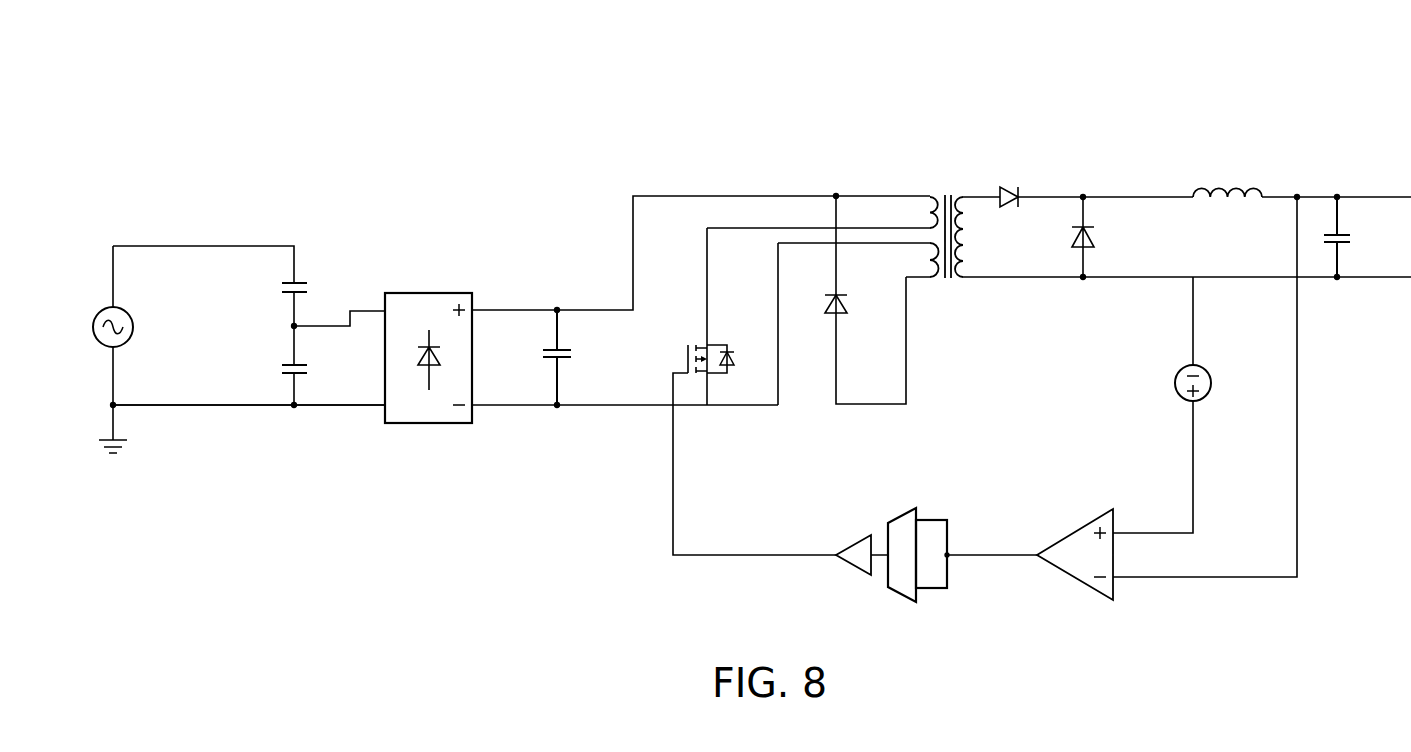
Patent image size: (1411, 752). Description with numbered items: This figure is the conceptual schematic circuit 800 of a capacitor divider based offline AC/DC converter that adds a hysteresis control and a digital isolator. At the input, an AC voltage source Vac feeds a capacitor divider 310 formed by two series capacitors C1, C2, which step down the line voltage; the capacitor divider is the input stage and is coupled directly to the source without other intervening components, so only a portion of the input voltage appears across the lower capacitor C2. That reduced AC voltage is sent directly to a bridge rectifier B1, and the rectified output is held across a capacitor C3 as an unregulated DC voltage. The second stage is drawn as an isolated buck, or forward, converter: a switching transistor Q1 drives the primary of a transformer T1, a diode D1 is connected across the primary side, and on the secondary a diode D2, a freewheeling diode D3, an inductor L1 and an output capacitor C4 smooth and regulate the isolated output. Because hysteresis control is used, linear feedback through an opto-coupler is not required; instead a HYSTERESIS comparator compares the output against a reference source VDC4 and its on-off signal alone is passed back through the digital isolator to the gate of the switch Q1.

The conceptual schematic circuit 800 is at (511, 124).
The capacitor divider 310 is at (279, 420).
The AC voltage source Vac is at (127, 327).
The capacitor C1 is at (282, 293).
The capacitor C2 is at (282, 374).
The bridge rectifier B1 is at (428, 347).
The capacitor C3 is at (571, 357).
The MOSFET switch Q1 is at (694, 375).
The diode D1 is at (851, 305).
The transformer T1 is at (946, 220).
The diode D2 is at (1010, 184).
The diode D3 is at (1098, 237).
The inductor L1 is at (1227, 179).
The capacitor C4 is at (1351, 237).
The DC reference voltage source VDC4 is at (1188, 405).
The hysteresis comparator HYSTERESIS is at (1086, 542).